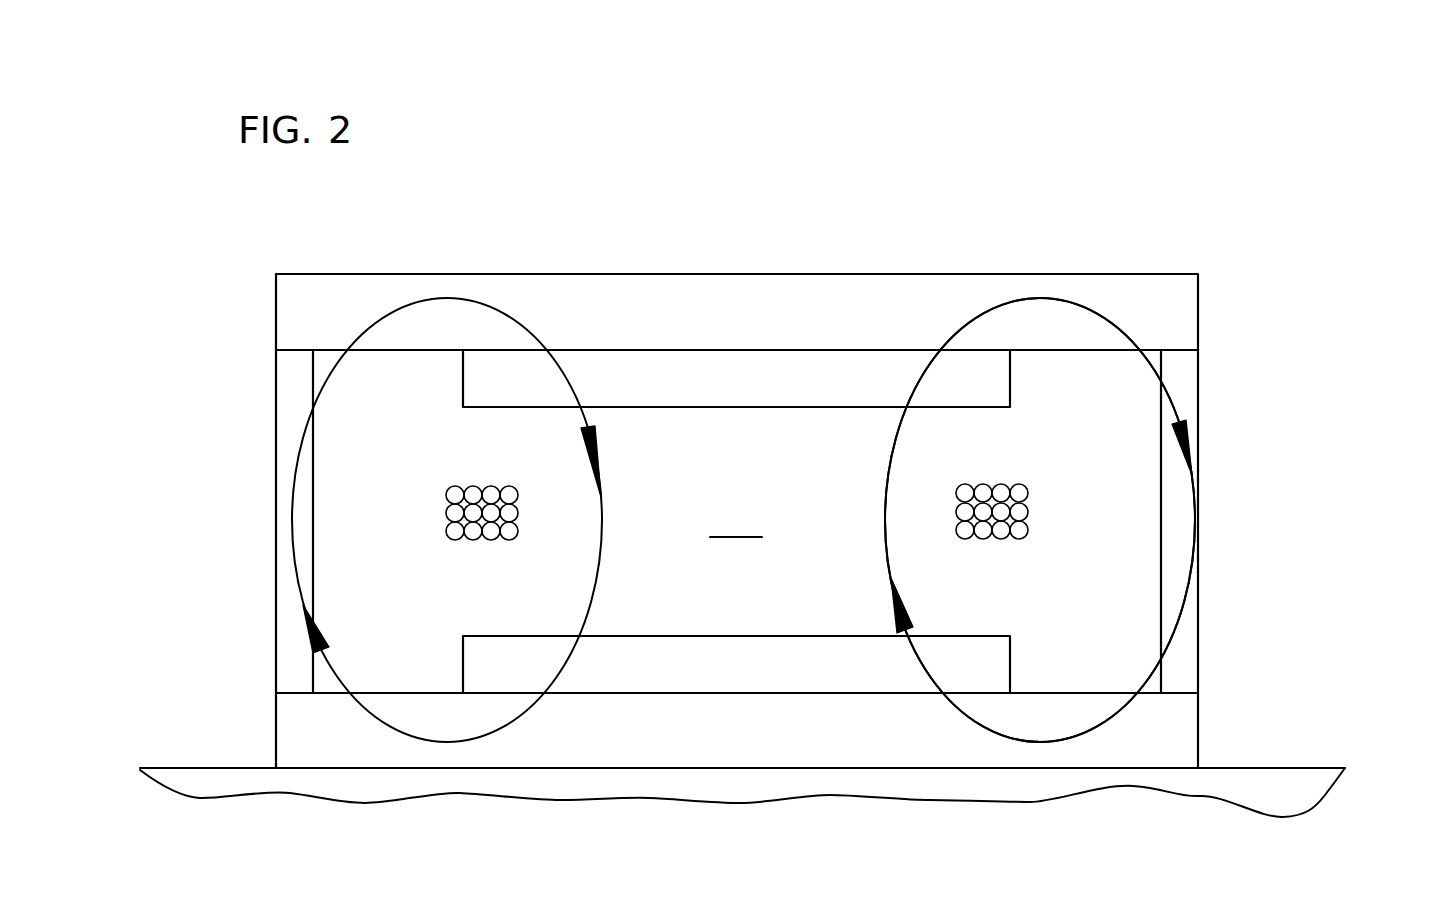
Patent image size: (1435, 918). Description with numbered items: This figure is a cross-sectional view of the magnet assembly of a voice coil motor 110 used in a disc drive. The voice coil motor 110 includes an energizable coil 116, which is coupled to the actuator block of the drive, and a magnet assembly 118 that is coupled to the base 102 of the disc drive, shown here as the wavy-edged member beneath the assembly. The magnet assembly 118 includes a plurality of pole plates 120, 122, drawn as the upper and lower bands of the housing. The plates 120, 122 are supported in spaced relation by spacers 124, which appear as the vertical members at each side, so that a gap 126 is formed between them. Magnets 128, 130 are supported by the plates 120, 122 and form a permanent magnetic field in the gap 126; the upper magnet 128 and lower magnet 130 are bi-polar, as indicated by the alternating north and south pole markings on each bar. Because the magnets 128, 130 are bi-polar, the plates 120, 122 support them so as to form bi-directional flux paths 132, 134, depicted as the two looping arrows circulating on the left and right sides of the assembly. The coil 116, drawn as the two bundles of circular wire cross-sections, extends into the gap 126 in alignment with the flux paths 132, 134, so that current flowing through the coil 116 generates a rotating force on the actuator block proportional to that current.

The base 102 is at (1276, 803).
The voice coil motor 110 is at (972, 173).
The energizable coil 116 is at (452, 488).
The magnet assembly 118 is at (484, 267).
The pole plate 120 is at (1176, 313).
The pole plate 122 is at (1177, 738).
The spacer 124 is at (298, 545).
The gap 126 is at (738, 537).
The magnet 128 is at (738, 375).
The magnet 130 is at (738, 660).
The flux path 132 is at (595, 553).
The flux path 134 is at (1072, 301).